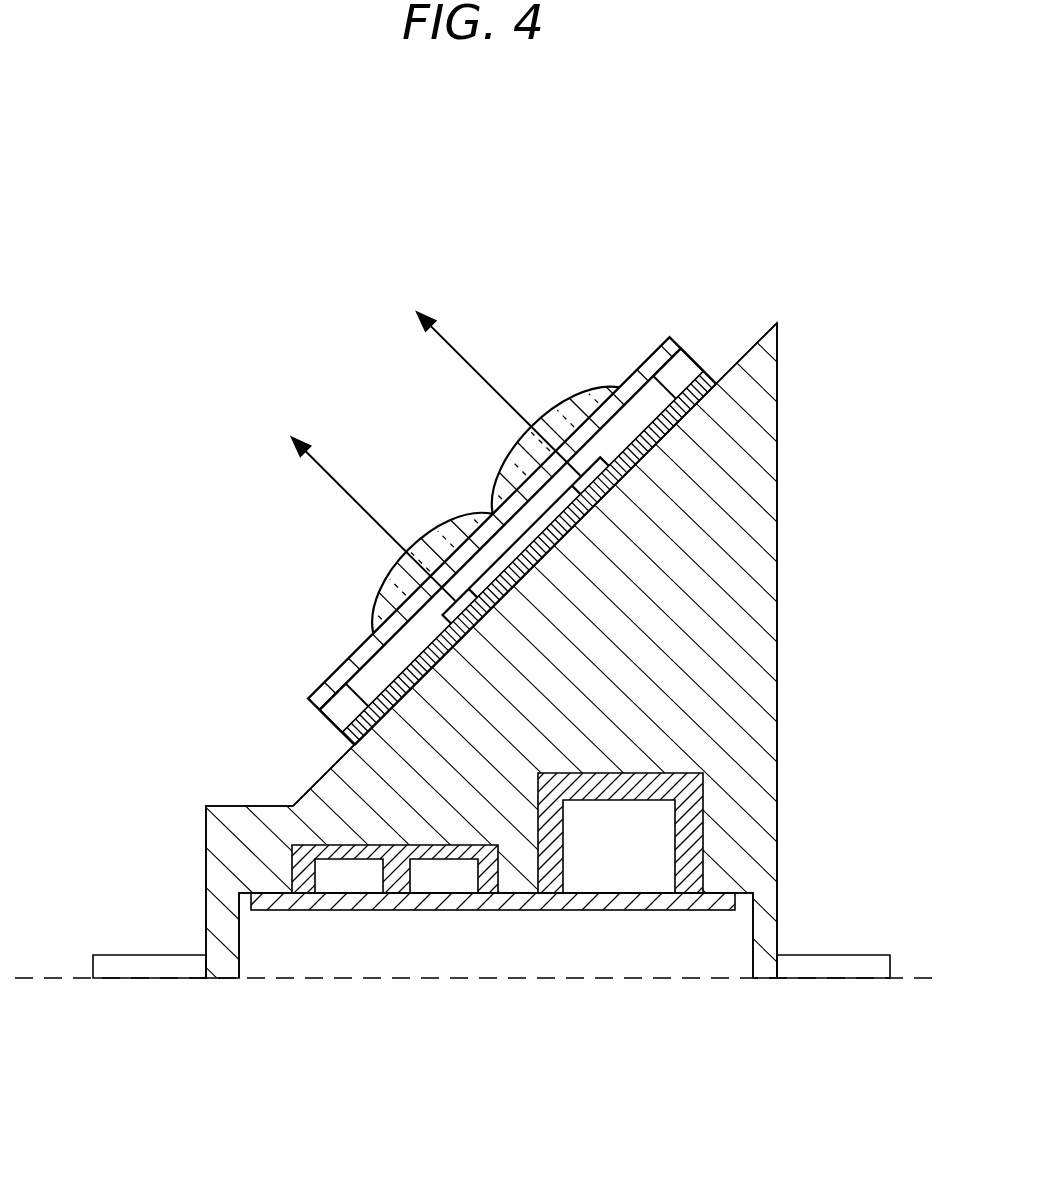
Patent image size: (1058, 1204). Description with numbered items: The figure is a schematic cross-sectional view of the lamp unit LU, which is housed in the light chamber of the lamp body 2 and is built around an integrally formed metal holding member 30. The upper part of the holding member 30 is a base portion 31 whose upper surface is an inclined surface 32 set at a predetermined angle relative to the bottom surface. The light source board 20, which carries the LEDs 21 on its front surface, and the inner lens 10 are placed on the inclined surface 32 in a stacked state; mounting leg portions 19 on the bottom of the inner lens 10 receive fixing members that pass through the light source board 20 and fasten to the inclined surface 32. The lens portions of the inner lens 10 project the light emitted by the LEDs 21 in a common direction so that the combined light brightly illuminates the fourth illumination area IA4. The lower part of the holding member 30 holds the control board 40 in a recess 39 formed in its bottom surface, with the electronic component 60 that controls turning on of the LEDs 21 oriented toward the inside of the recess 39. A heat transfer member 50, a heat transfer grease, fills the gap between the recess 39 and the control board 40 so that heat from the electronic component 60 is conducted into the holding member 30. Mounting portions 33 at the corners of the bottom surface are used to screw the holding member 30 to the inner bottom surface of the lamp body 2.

The lamp unit LU is at (166, 196).
The fourth illumination area IA4 is at (418, 292).
The lamp body 2 is at (70, 976).
The inner lens 10 is at (642, 354).
The mounting leg portions 19 is at (682, 370).
The light source board 20 is at (706, 383).
The LEDs 21 is at (633, 430).
The holding member 30 is at (793, 340).
The base portion 31 is at (712, 525).
The inclined surface 32 is at (322, 775).
The mounting portions 33 is at (180, 962).
The recess 39 is at (657, 935).
The control board 40 is at (266, 898).
The heat transfer member 50 is at (492, 880).
The electronic component 60 is at (343, 880).